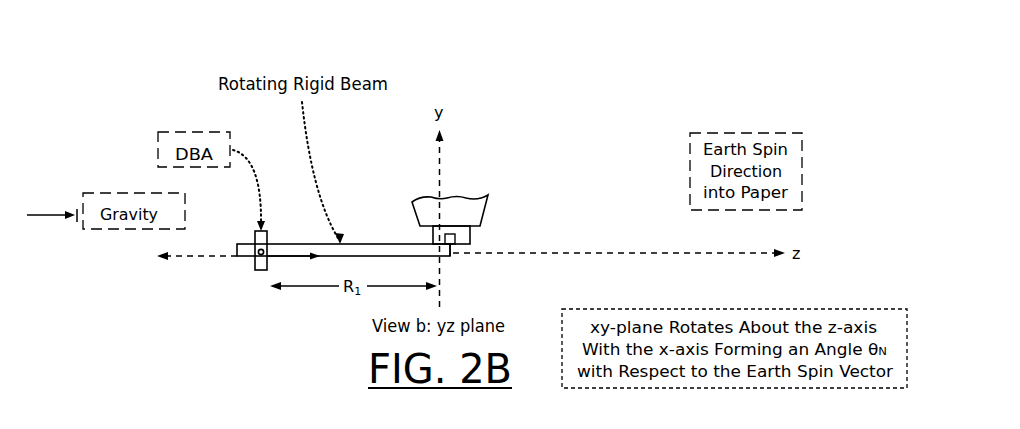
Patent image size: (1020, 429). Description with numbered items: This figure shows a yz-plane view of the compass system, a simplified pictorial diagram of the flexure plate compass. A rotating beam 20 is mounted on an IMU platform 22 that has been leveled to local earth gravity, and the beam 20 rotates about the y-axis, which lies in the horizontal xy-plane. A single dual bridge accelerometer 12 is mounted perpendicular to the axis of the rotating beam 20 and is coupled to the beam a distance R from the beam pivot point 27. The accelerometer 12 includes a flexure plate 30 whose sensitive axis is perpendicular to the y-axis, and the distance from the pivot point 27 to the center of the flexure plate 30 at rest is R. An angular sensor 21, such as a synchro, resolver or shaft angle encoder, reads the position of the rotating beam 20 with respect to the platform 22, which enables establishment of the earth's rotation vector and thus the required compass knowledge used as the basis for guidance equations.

The accelerometer 12 is at (256, 234).
The flexure plate 30 is at (265, 246).
The rotating beam 20 is at (363, 243).
The IMU platform 22 is at (489, 204).
The angular sensor 21 is at (458, 249).
The pivot point 27 is at (451, 246).